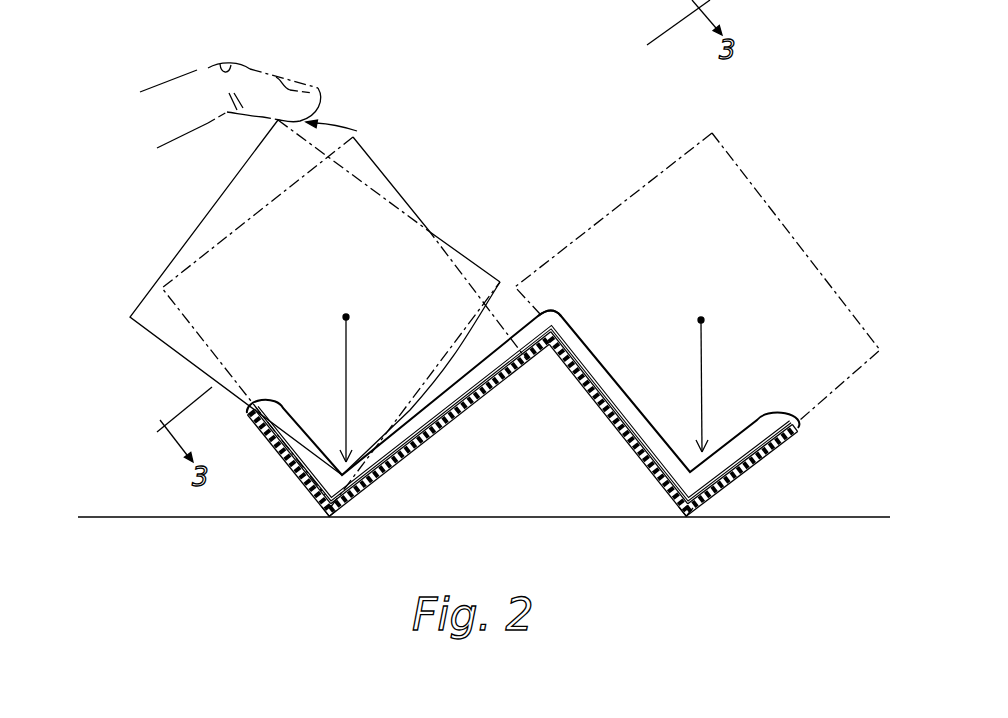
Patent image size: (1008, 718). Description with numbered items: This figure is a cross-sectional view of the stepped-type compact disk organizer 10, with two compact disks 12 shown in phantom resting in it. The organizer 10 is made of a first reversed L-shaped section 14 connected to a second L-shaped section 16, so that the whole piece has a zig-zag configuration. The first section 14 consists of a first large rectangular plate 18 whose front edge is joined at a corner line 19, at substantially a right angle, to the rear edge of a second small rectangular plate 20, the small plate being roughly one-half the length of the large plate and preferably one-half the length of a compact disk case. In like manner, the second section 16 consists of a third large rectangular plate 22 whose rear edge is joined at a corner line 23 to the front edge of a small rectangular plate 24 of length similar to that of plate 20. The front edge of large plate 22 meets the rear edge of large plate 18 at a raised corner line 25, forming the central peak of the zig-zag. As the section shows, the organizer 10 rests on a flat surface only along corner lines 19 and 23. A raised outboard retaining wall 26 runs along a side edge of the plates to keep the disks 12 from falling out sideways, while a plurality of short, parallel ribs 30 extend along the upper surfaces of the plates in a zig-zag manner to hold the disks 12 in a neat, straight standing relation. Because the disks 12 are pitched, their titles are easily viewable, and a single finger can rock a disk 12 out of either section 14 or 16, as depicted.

The compact disk organizer 10 is at (504, 207).
The compact disk 12 is at (378, 177).
The first reversed L-shaped section 14 is at (370, 496).
The second L-shaped section 16 is at (636, 476).
The first large rectangular plate 18 is at (442, 428).
The corner line 19 is at (333, 519).
The second small rectangular plate 20 is at (290, 465).
The third large rectangular plate 22 is at (612, 422).
The corner line 23 is at (688, 518).
The small rectangular plate 24 is at (752, 463).
The raised corner line 25 is at (563, 314).
The first raised outboard retaining wall 26 is at (588, 350).
The ribs 30 is at (453, 402).